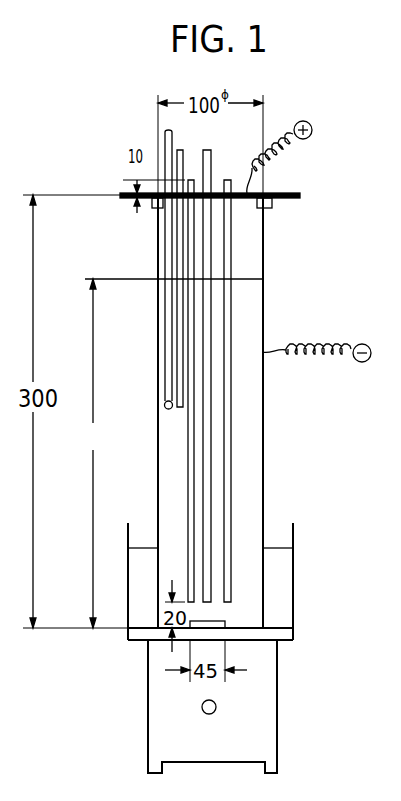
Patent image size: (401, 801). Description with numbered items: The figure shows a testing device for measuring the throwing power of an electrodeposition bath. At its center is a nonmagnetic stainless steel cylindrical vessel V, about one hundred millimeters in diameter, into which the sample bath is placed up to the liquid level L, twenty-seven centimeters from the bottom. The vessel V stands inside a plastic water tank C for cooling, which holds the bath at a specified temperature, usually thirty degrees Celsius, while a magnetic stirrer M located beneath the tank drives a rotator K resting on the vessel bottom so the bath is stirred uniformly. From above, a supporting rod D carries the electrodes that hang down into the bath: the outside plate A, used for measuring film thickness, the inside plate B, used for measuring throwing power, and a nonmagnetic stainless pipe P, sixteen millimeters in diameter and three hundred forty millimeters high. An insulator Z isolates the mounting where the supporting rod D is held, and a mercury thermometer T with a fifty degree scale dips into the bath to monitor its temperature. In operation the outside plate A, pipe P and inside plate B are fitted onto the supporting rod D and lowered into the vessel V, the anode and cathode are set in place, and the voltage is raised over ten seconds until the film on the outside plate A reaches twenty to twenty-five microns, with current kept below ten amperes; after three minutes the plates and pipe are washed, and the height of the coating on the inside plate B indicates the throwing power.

The mercury thermometer T is at (165, 134).
The supporting rod D is at (290, 193).
The insulator Z is at (268, 205).
The outside plate A is at (192, 258).
The inside plate B is at (208, 310).
The nonmagnetic stainless pipe P is at (230, 405).
The nonmagnetic stainless steel cylindrical vessel V is at (263, 455).
The liquid level L is at (165, 449).
The plastic water tank C is at (293, 559).
The rotator K is at (225, 620).
The magnetic stirrer M is at (273, 690).